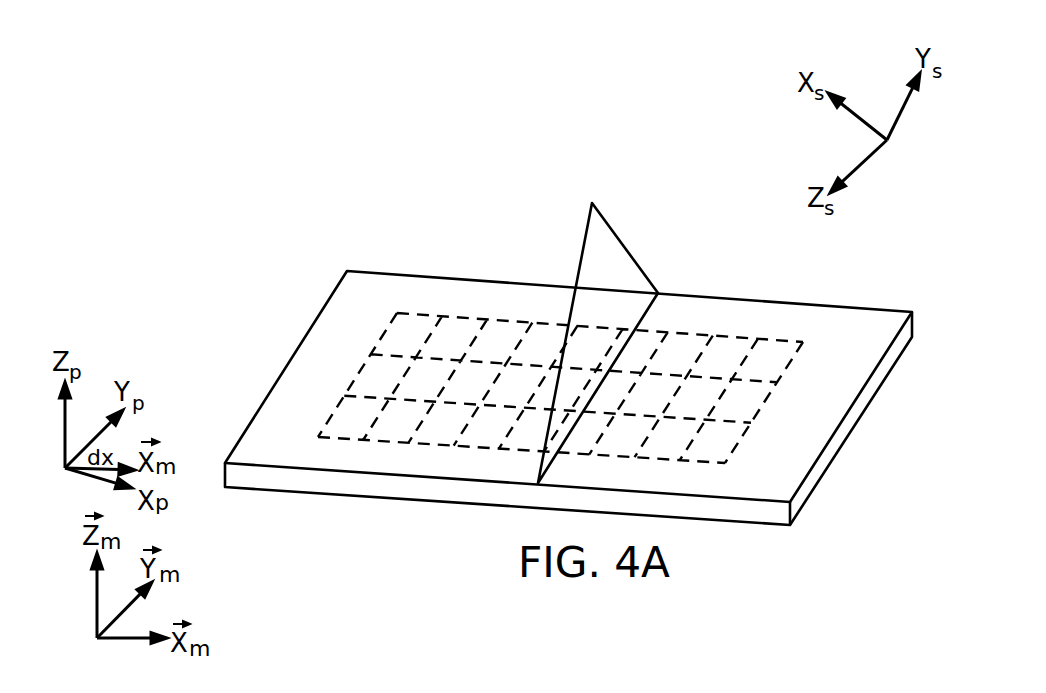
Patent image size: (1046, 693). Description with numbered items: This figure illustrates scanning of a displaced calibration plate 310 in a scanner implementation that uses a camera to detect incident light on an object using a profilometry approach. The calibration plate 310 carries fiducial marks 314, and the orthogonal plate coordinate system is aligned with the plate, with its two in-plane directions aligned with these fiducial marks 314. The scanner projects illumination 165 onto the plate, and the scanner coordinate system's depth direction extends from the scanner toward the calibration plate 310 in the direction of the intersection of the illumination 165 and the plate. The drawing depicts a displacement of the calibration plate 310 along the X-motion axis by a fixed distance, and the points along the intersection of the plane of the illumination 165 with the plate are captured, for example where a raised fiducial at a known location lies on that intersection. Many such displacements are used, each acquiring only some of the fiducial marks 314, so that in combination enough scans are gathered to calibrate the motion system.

The illumination 165 is at (612, 248).
The fiducial marks 314 is at (760, 405).
The calibration plate 310 is at (272, 487).